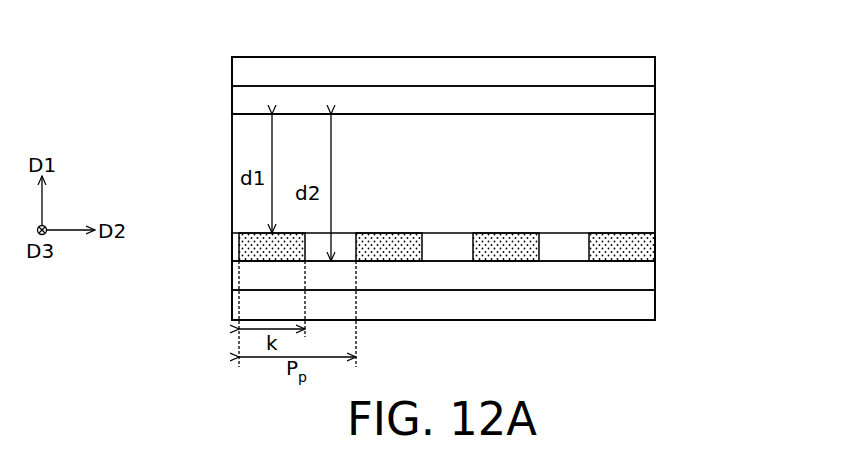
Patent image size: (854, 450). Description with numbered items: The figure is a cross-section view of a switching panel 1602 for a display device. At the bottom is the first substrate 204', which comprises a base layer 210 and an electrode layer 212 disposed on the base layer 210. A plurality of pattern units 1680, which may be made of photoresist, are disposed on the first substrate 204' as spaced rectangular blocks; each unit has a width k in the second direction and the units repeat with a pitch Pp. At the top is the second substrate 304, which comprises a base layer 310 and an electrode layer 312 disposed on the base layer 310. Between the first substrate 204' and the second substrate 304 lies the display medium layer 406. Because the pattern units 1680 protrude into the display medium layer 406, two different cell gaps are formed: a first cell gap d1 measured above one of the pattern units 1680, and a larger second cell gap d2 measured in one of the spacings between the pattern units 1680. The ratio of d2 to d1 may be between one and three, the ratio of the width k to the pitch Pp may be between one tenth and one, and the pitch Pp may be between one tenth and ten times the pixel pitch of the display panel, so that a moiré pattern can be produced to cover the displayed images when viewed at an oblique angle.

The switching panel 1602 is at (232, 37).
The base layer 310 is at (655, 73).
The electrode layer 312 is at (655, 103).
The second substrate 304 is at (740, 53).
The display medium layer 406 is at (655, 177).
The pattern units 1680 is at (655, 242).
The electrode layer 212 is at (655, 278).
The first substrate 204' is at (523, 280).
The base layer 210 is at (655, 310).